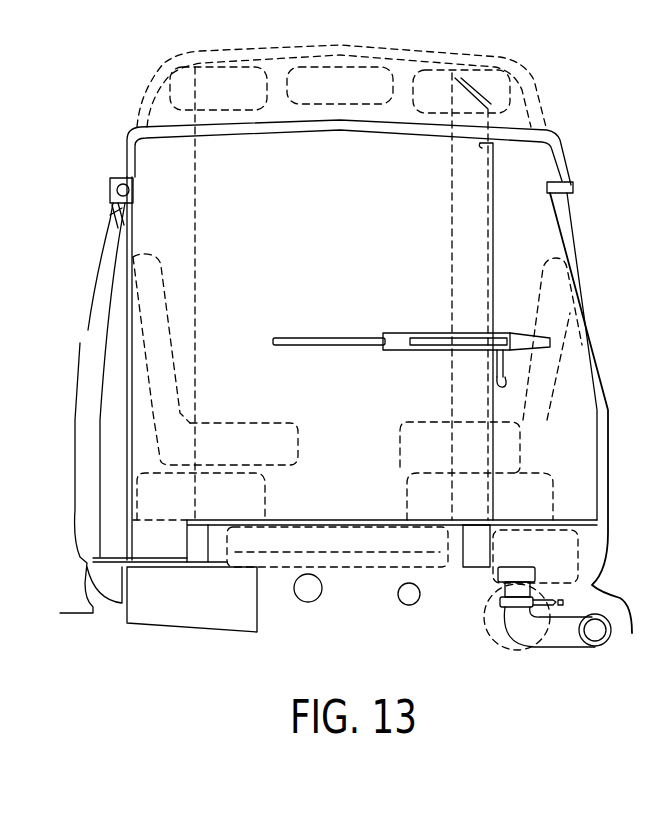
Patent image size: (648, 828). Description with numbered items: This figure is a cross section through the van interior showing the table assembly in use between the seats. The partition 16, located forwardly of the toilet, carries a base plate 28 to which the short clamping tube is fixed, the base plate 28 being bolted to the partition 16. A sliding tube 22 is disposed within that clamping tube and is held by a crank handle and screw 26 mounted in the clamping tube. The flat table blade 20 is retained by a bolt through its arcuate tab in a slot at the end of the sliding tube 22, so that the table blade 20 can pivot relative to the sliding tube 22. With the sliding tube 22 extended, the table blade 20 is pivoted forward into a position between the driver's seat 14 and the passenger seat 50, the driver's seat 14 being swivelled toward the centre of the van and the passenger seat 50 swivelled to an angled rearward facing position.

The driver's seat 14 is at (437, 455).
The partition 16 is at (523, 218).
The table blade 20 is at (347, 338).
The sliding tube 22 is at (433, 350).
The crank handle and screw 26 is at (503, 362).
The base plate 28 is at (515, 330).
The passenger seat 50 is at (280, 455).